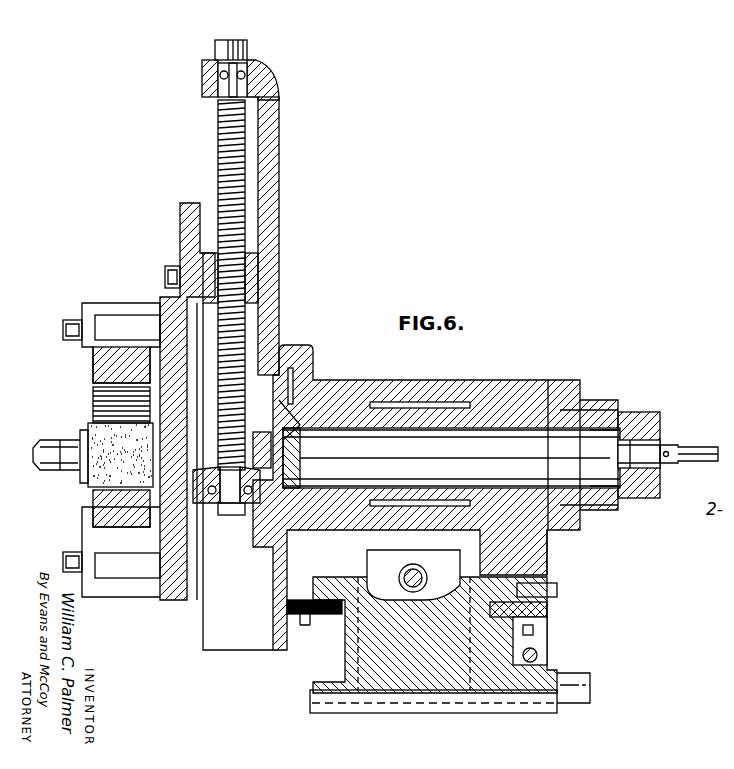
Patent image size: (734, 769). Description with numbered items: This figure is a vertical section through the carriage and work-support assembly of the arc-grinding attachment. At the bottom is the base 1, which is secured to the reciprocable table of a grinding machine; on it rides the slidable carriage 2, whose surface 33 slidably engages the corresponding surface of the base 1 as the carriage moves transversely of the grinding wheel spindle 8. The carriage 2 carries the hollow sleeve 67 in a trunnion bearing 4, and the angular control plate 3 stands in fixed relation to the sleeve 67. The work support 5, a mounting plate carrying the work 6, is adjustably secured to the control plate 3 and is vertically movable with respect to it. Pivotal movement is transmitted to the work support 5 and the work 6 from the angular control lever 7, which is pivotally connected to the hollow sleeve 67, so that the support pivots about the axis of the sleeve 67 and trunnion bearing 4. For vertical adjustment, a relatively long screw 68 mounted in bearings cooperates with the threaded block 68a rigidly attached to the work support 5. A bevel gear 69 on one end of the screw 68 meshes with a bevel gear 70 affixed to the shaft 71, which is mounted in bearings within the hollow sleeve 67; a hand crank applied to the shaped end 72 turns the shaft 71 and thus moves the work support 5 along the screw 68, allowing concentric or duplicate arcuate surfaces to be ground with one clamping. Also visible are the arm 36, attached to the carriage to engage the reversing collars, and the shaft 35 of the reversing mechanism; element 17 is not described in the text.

The base 1 is at (350, 657).
The slidable carriage 2 is at (340, 380).
The angular control plate 3 is at (280, 205).
The trunnion bearing 4 is at (508, 410).
The work support 5 is at (185, 205).
The work 6 is at (128, 345).
The angular control lever 7 is at (582, 532).
The grinding wheel spindle 8 is at (48, 440).
The grinding wheel 17 is at (105, 470).
The surface 33 is at (719, 550).
The shaft 35 is at (540, 660).
The arm 36 is at (548, 640).
The hollow sleeve 67 is at (548, 382).
The screw 68 is at (218, 128).
The threaded block 68a is at (258, 265).
The bevel gear 69 is at (210, 505).
The bevel gear 70 is at (282, 352).
The shaft 71 is at (595, 445).
The shaped end 72 is at (710, 445).